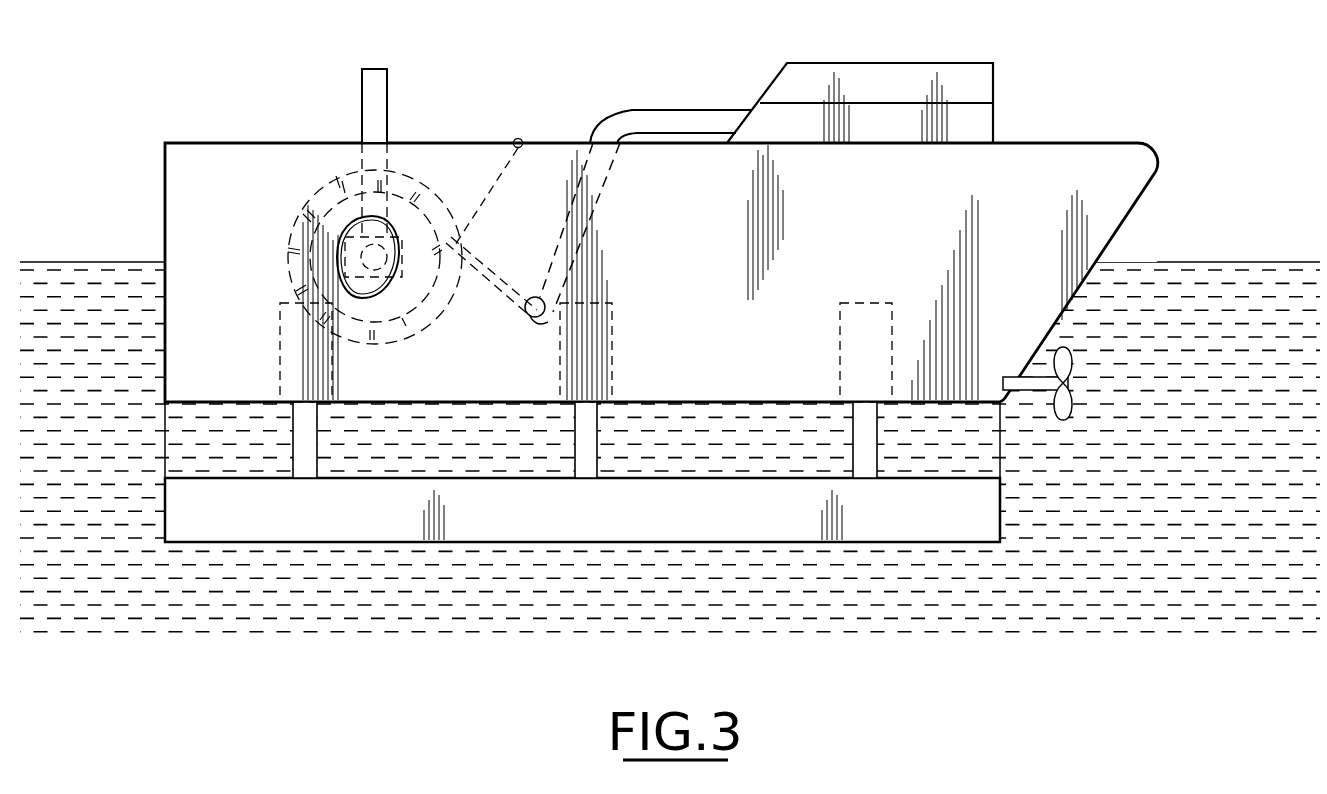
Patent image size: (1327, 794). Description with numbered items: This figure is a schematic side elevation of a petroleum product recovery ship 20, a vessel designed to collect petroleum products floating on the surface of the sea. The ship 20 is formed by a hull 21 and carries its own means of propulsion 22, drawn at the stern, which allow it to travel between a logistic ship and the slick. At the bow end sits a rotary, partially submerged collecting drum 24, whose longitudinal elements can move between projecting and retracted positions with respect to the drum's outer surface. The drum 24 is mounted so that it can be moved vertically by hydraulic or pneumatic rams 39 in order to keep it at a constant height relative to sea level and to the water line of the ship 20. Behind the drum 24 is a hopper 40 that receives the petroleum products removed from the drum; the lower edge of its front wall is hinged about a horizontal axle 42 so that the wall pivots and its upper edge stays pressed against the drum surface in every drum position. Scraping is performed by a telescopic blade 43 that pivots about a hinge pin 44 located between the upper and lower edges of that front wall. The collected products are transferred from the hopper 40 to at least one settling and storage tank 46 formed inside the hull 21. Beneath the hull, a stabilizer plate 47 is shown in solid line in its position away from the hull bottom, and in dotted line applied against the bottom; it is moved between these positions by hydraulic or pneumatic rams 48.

The petroleum product recovery ship 20 is at (668, 92).
The hull 21 is at (1092, 143).
The means of propulsion 22 is at (1072, 381).
The collecting drum 24 is at (308, 166).
The hydraulic or pneumatic rams 39 is at (382, 92).
The hopper 40 is at (523, 268).
The horizontal axle 42 is at (541, 323).
The telescopic blade 43 is at (483, 208).
The hinge pin 44 is at (518, 139).
The settling and storage tank 46 is at (872, 190).
The stabilizer plate 47 is at (677, 542).
The hydraulic or pneumatic rams 48 is at (280, 355).